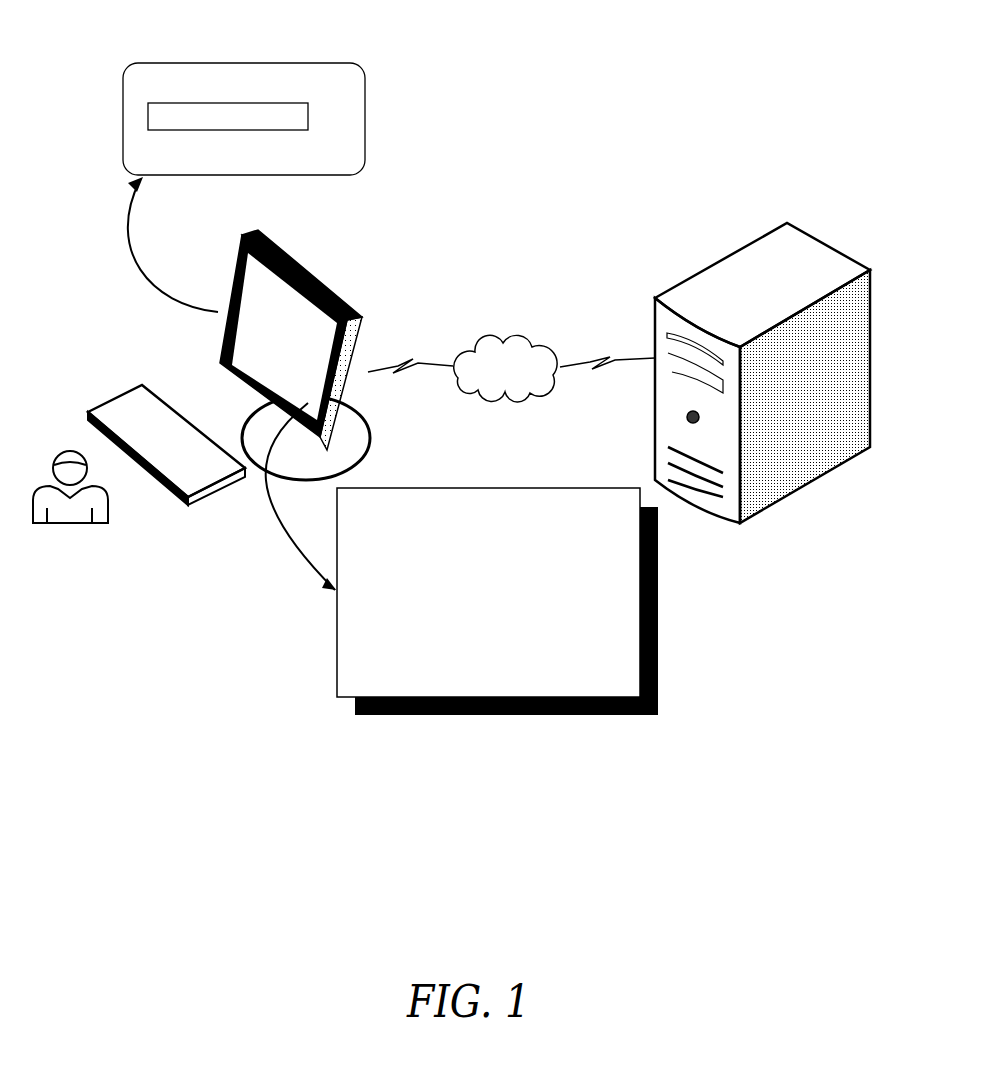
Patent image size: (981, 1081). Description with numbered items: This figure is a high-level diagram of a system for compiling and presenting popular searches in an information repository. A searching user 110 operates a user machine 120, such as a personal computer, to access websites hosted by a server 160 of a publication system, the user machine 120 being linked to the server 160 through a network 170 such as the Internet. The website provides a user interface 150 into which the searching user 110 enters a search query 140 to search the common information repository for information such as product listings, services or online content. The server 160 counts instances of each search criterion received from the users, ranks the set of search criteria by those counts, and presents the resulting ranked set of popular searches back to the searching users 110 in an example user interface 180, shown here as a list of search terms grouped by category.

The searching user 110 is at (108, 515).
The user machine 120 is at (280, 240).
The search query 140 is at (263, 108).
The user interface 150 is at (170, 63).
The server 160 is at (827, 242).
The network 170 is at (505, 336).
The example user interface 180 is at (657, 558).